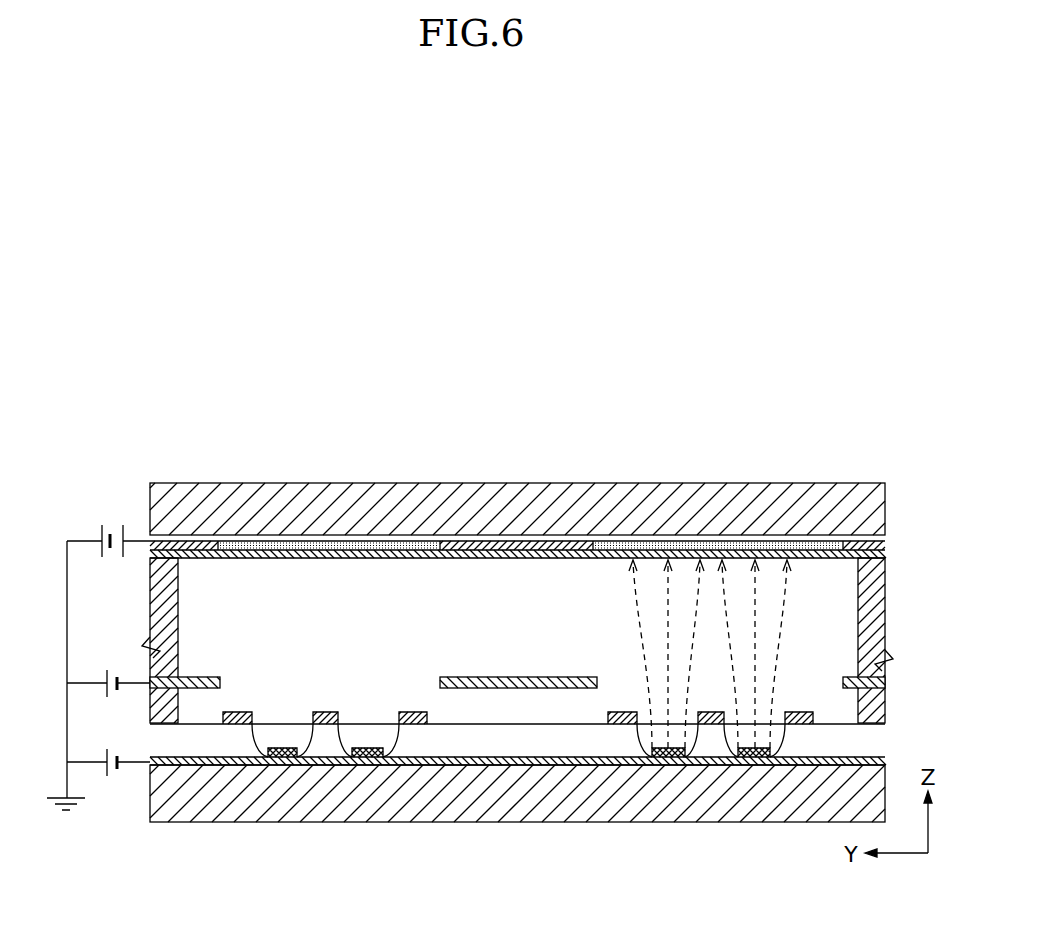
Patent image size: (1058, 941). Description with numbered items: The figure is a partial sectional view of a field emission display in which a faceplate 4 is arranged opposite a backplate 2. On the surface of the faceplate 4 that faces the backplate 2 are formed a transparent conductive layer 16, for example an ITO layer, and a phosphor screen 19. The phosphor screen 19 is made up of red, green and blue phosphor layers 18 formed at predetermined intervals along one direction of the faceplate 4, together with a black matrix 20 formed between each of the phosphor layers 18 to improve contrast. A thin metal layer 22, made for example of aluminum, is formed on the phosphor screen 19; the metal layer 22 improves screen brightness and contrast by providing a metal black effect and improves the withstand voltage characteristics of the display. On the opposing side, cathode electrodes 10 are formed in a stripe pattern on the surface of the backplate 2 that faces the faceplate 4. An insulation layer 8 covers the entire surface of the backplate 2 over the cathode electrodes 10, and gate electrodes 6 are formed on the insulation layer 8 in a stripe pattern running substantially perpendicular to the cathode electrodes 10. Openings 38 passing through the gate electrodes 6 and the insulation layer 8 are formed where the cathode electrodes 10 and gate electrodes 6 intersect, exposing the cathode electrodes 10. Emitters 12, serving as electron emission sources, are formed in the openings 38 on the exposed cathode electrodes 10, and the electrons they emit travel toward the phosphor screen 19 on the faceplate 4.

The backplate 2 is at (574, 823).
The faceplate 4 is at (565, 490).
The gate electrodes 6 is at (402, 716).
The insulation layer 8 is at (880, 745).
The cathode electrodes 10 is at (452, 765).
The emitters 12 is at (365, 758).
The transparent conductive layer 16 is at (662, 548).
The phosphor layers 18 is at (415, 546).
The phosphor screen 19 is at (352, 433).
The black matrix 20 is at (208, 546).
The metal layer 22 is at (880, 553).
The openings 38 is at (305, 745).